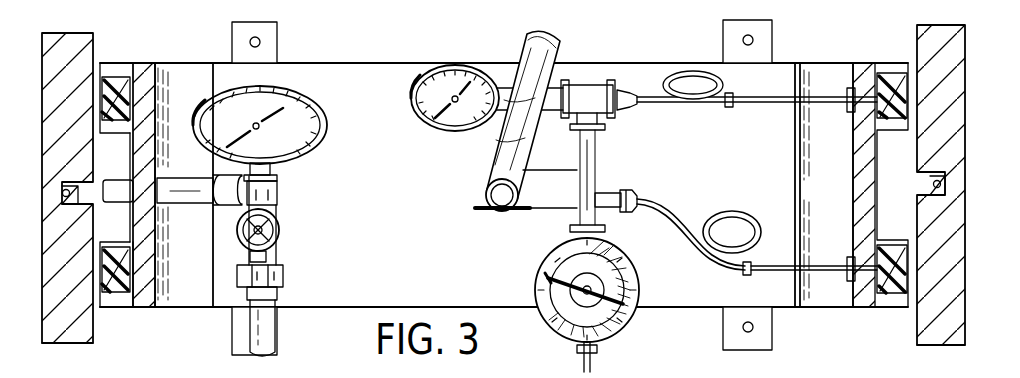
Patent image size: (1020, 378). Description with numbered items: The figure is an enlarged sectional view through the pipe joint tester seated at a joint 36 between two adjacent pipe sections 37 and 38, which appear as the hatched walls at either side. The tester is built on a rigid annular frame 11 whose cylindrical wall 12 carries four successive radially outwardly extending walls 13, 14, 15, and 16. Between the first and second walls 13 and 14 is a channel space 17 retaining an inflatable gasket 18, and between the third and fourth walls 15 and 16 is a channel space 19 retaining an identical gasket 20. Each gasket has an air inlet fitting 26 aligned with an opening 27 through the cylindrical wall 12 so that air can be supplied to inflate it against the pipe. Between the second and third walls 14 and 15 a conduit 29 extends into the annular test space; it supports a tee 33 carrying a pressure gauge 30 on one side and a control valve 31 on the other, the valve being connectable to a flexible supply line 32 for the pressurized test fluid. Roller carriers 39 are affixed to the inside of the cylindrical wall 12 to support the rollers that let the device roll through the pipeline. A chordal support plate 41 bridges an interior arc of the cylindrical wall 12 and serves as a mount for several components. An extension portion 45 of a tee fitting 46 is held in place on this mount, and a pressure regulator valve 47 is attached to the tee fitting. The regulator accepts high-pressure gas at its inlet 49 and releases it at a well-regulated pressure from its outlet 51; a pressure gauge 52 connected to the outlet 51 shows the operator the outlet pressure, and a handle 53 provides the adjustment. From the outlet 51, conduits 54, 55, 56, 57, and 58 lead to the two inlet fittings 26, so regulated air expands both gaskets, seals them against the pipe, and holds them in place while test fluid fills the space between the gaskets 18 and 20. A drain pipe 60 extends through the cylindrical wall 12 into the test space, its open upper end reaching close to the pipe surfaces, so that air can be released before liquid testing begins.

The annular frame 11 is at (853, 180).
The cylindrical wall 12 is at (158, 100).
The first radial wall 13 is at (143, 72).
The second radial wall 14 is at (118, 138).
The third radial wall 15 is at (160, 238).
The fourth radial wall 16 is at (130, 285).
The channel space 17 is at (150, 105).
The gasket 18 is at (104, 77).
The channel space 19 is at (140, 290).
The gasket 20 is at (104, 290).
The air inlet fitting 26 is at (857, 80).
The opening 27 is at (850, 105).
The conduit 29 is at (172, 198).
The pressure gauge 30 is at (290, 97).
The control valve 31 is at (280, 222).
The flexible supply line 32 is at (276, 345).
The tee 33 is at (270, 195).
The joint 36 is at (78, 192).
The pipe section 37 is at (78, 50).
The pipe section 38 is at (70, 336).
The roller carrier 39 is at (268, 37).
The chordal support plate 41 is at (414, 238).
The extension portion 45 is at (550, 205).
The tee fitting 46 is at (634, 197).
The pressure regulator valve 47 is at (634, 292).
The inlet 49 is at (598, 352).
The outlet 51 is at (602, 230).
The pressure gauge 52 is at (412, 117).
The handle 53 is at (548, 280).
The conduit 54 is at (590, 147).
The conduit 55 is at (740, 212).
The conduit 56 is at (752, 274).
The conduit 57 is at (722, 102).
The conduit 58 is at (745, 106).
The drain pipe 60 is at (484, 186).